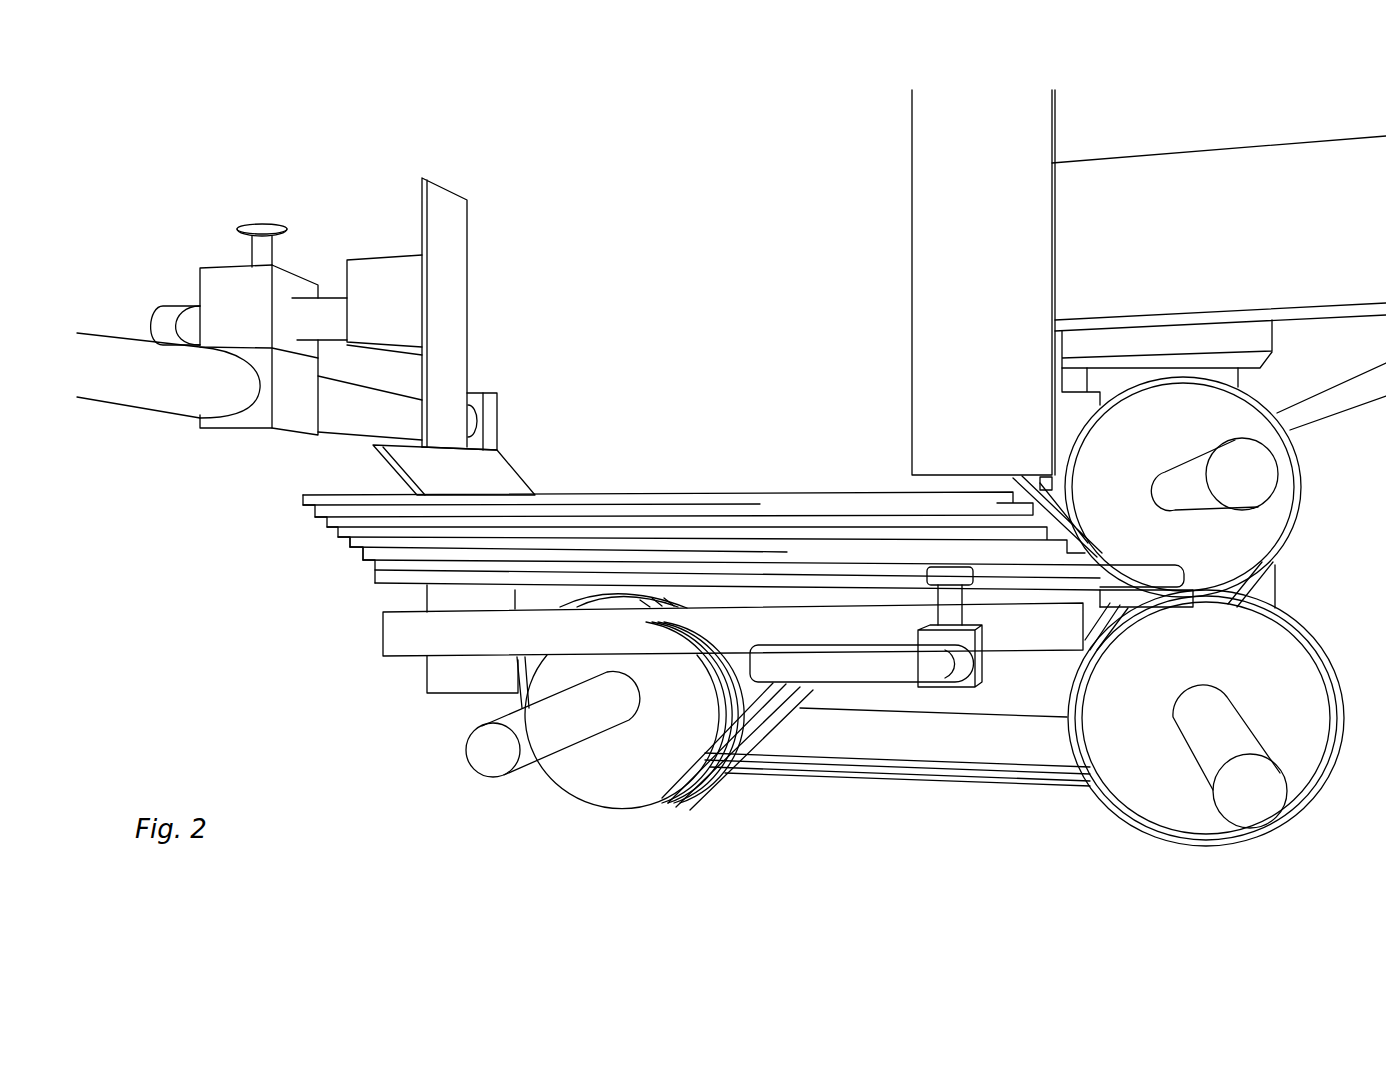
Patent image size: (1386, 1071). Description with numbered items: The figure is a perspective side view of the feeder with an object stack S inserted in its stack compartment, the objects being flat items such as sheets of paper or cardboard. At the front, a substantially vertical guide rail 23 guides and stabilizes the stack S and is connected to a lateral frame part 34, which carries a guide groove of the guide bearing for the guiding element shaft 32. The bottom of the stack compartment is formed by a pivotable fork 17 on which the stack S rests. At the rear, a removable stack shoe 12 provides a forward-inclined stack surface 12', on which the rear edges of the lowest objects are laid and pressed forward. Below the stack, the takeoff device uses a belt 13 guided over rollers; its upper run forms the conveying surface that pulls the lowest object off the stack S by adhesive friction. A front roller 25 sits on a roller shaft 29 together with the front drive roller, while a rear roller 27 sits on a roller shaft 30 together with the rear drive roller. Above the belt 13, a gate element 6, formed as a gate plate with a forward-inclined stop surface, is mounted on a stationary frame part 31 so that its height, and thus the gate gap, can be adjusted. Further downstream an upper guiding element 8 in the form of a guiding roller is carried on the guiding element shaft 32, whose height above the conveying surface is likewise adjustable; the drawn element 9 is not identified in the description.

The stack shoe 12 is at (491, 314).
The stack surface 12' is at (495, 453).
The sheet stack / guide 9 is at (700, 493).
The object stack S is at (348, 548).
The fork 17 is at (413, 636).
The roller 27 is at (653, 775).
The roller shaft 30 is at (497, 753).
The belt 13 is at (877, 763).
The guide rail 23 is at (986, 256).
The lateral frame part 34 is at (1232, 249).
The frame part 31 is at (1245, 339).
The gate element 6 is at (1050, 477).
The upper guiding element 8 is at (1224, 557).
The guiding element shaft 32 is at (1257, 482).
The roller 25 is at (1153, 694).
The roller shaft 29 is at (1250, 798).